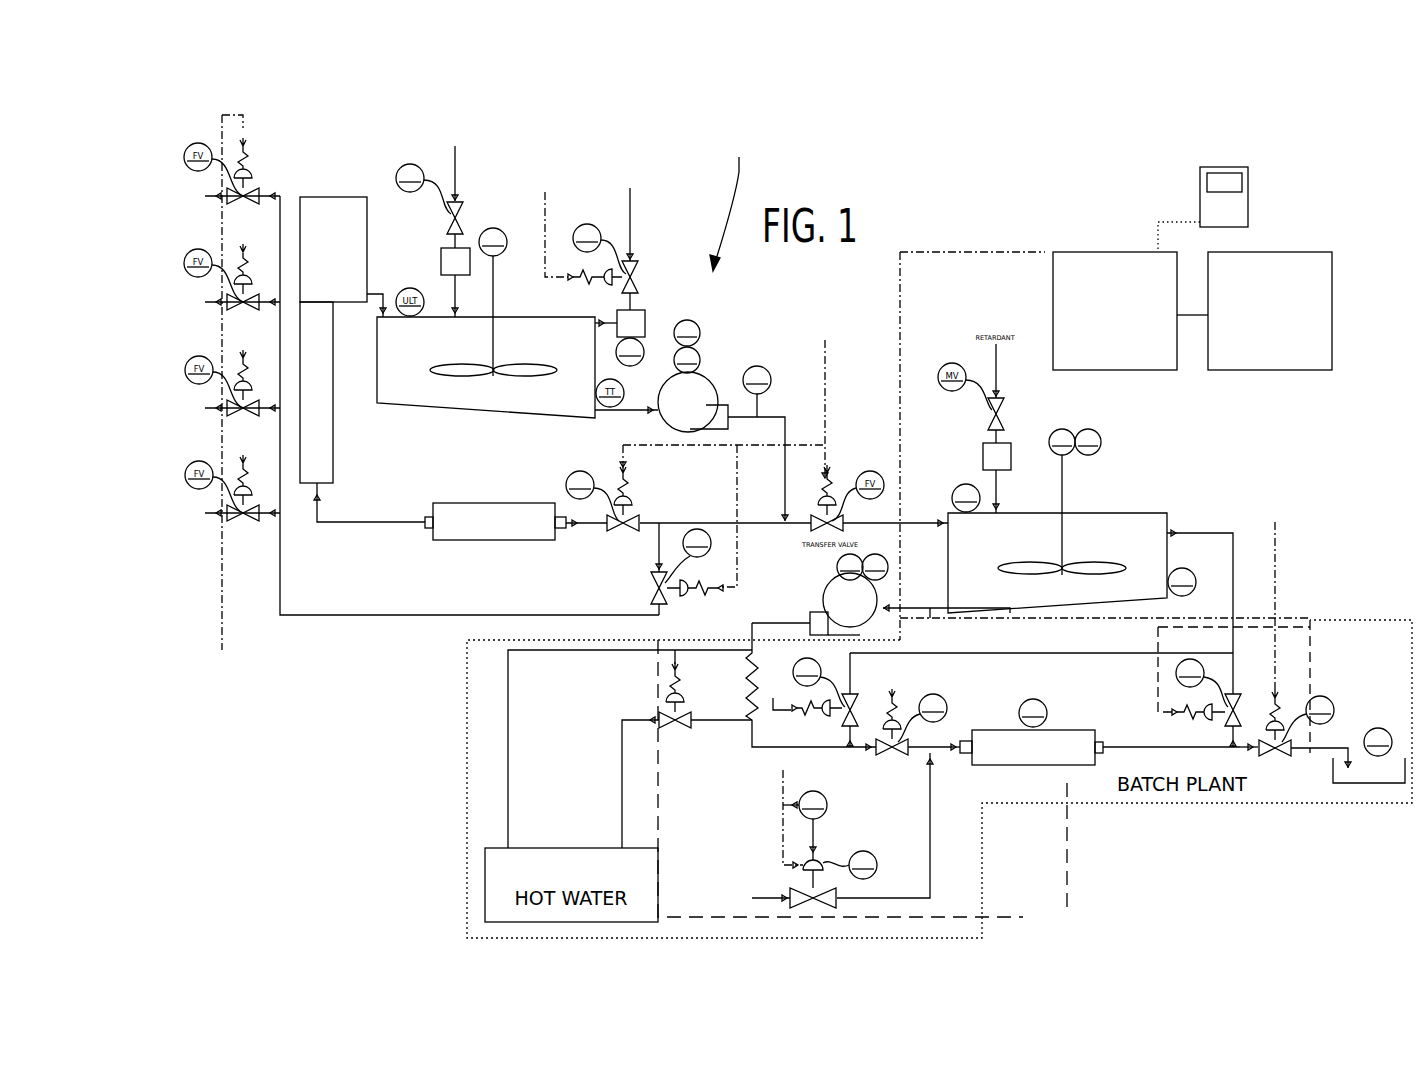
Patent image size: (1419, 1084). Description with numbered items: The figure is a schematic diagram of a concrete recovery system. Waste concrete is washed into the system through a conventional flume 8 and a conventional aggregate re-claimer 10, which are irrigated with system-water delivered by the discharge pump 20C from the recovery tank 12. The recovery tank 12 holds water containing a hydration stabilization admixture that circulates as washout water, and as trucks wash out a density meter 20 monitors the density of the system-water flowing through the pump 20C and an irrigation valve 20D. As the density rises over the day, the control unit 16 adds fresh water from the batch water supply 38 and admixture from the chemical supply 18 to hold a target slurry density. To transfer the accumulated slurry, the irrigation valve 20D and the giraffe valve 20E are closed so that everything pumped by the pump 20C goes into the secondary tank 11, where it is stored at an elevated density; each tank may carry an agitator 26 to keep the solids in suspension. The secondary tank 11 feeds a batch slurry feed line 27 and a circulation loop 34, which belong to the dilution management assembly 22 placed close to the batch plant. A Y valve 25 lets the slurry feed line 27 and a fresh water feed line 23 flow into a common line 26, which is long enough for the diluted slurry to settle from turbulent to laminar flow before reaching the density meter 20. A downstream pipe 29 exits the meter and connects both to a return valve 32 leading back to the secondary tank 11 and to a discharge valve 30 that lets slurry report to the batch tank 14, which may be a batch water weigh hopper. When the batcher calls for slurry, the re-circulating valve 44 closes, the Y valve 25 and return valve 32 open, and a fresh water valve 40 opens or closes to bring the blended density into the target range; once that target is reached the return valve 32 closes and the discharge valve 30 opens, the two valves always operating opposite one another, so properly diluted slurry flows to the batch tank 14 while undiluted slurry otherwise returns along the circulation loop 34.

The flume 8 is at (333, 440).
The aggregate re-claimer 10 is at (327, 208).
The secondary tank 11 is at (1137, 517).
The recovery tank 12 is at (423, 402).
The batch tank 14 is at (1400, 770).
The control unit 16 is at (1178, 372).
The chemical supply 18 is at (465, 179).
The density meter 20 is at (995, 757).
The discharge pump 20C is at (700, 394).
The irrigation valve 20D is at (632, 517).
The giraffe valve 20E is at (651, 583).
The dilution management assembly 22 is at (159, 432).
The fresh water feed line 23 is at (930, 815).
The Y valve 25 is at (906, 740).
The common line 26 is at (493, 228).
The batch slurry feed line 27 is at (783, 624).
The downstream pipe 29 is at (1249, 752).
The discharge valve 30 is at (1263, 736).
The return valve 32 is at (1243, 697).
The circulation loop 34 is at (1038, 655).
The batch water supply 38 is at (630, 188).
The fresh water valve 40 is at (788, 886).
The re-circulating valve 44 is at (857, 705).